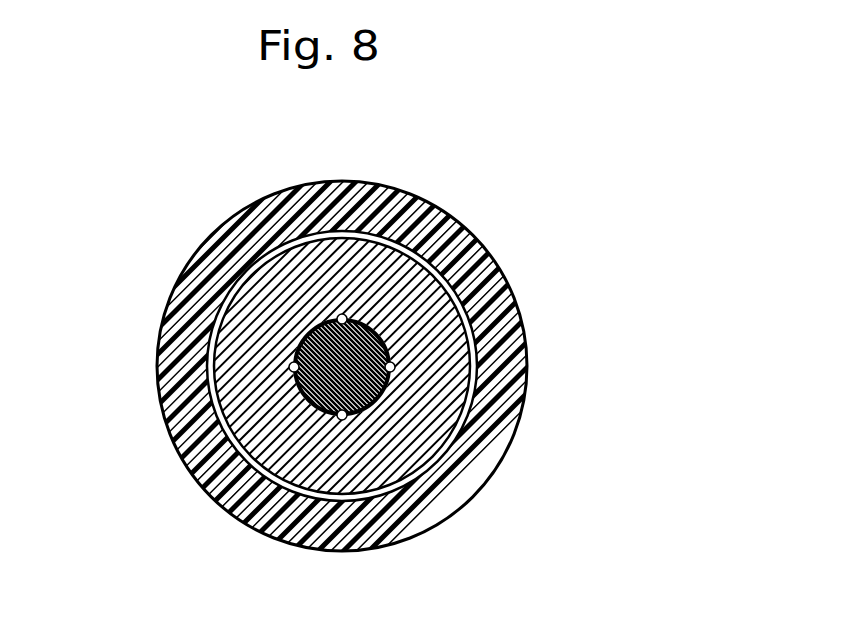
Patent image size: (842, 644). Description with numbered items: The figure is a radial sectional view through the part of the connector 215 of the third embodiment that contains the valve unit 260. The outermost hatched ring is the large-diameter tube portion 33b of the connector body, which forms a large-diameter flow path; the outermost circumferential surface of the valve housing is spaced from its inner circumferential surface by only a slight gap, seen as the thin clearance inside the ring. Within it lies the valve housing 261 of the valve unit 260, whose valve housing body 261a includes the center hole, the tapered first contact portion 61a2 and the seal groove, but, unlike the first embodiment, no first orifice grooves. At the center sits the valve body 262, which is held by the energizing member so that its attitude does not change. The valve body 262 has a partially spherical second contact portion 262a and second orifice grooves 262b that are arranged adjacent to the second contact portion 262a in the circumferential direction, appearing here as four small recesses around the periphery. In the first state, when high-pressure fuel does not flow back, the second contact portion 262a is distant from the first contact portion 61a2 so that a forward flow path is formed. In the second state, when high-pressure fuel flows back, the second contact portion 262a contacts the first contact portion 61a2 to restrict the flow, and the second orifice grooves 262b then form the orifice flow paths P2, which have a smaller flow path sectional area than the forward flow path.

The connector 215 is at (591, 235).
The large-diameter tube portion 33b is at (197, 283).
The valve unit 260 is at (414, 263).
The valve housing 261 is at (258, 366).
The valve housing body 261a is at (253, 360).
The valve body 262 is at (368, 407).
The second contact portion 262a is at (385, 328).
The second orifice grooves 262b is at (343, 318).
The orifice flow path P2 is at (392, 367).
The first contact portion 61a2 is at (310, 405).